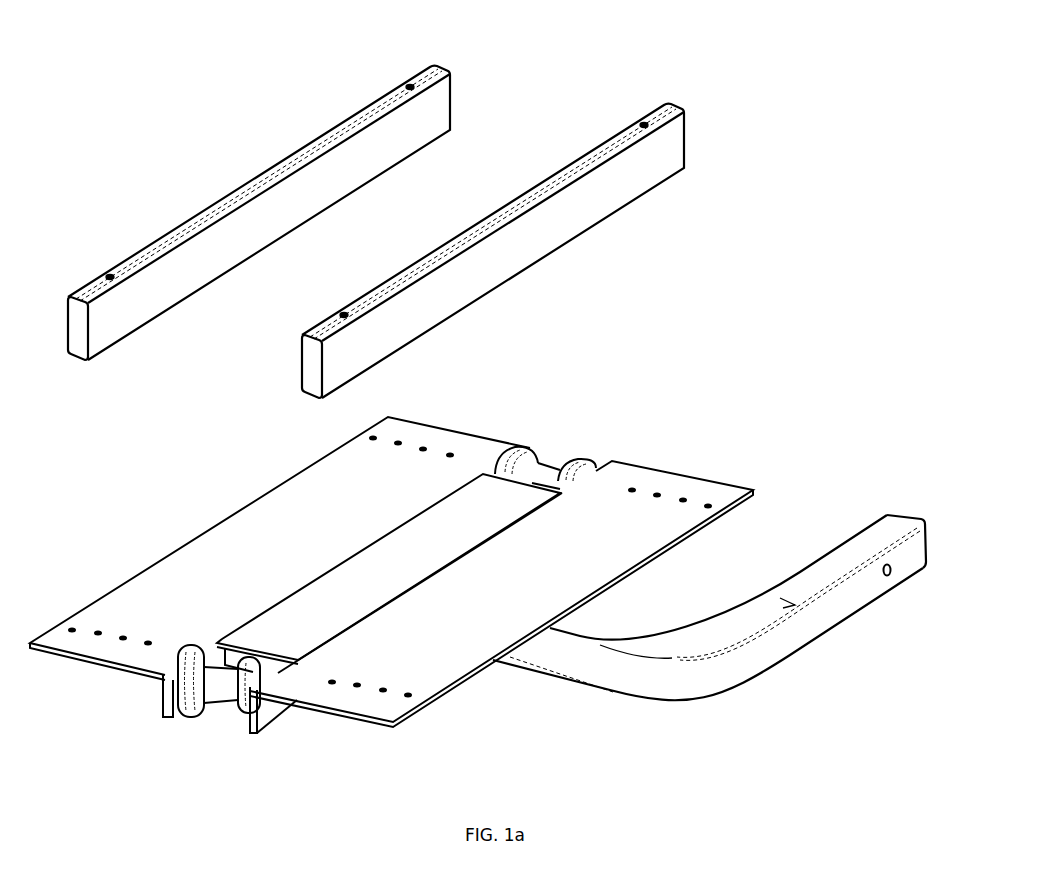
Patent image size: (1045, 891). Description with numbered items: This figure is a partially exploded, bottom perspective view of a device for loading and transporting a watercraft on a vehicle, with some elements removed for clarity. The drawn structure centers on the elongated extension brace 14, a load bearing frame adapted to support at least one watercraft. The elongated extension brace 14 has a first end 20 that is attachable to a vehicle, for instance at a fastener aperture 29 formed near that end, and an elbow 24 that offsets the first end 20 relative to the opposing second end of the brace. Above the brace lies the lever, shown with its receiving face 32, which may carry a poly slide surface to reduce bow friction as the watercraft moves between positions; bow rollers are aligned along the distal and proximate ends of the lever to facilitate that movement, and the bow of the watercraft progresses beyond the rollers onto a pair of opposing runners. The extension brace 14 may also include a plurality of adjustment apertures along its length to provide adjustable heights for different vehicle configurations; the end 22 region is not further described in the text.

The elongated extension brace 14 is at (667, 643).
The first end 20 is at (905, 515).
The receiver tube end 22 is at (858, 592).
The elbow 24 is at (650, 688).
The fastener aperture 29 is at (893, 573).
The receiving face 32 is at (268, 530).